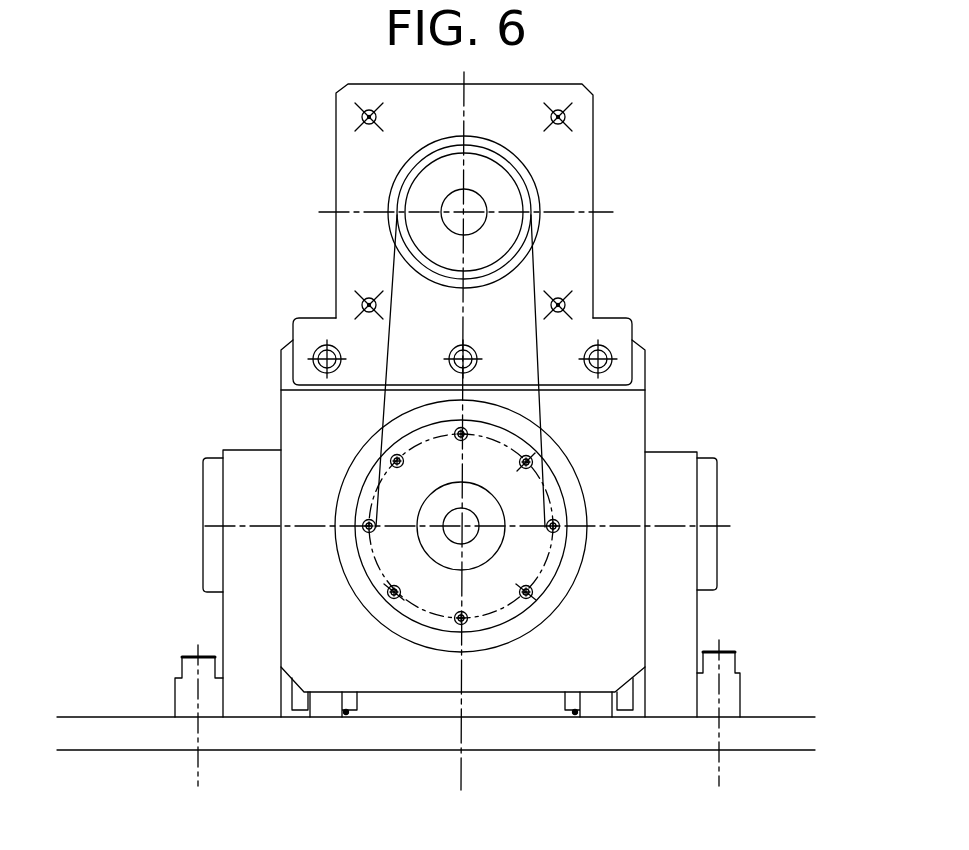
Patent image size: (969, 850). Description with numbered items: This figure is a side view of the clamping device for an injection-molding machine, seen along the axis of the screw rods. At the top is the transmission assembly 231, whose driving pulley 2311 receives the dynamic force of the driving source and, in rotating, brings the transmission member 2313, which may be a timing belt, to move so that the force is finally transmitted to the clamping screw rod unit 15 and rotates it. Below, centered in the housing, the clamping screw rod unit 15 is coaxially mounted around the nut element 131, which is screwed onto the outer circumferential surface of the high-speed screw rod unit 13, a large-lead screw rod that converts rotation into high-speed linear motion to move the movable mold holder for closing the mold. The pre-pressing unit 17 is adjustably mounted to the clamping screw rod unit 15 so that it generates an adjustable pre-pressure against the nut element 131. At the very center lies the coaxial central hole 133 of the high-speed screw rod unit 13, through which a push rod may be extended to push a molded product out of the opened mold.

The high-speed screw rod unit 13 is at (483, 543).
The nut element 131 is at (407, 487).
The central hole 133 is at (470, 520).
The clamping screw rod unit 15 is at (370, 572).
The pre-pressing unit 17 is at (520, 470).
The transmission assembly 231 is at (575, 331).
The driving pulley 2311 is at (525, 173).
The transmission member 2313 is at (533, 273).